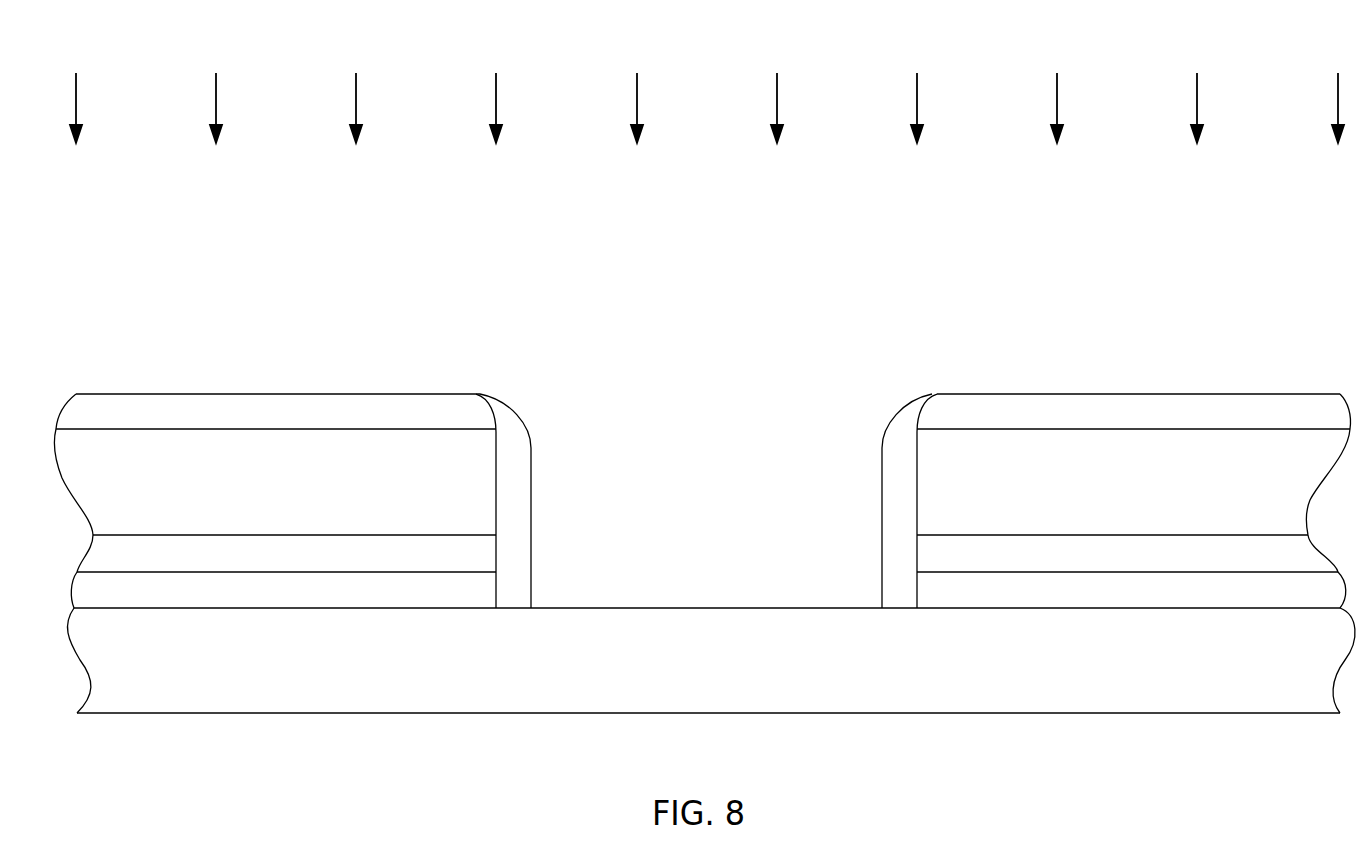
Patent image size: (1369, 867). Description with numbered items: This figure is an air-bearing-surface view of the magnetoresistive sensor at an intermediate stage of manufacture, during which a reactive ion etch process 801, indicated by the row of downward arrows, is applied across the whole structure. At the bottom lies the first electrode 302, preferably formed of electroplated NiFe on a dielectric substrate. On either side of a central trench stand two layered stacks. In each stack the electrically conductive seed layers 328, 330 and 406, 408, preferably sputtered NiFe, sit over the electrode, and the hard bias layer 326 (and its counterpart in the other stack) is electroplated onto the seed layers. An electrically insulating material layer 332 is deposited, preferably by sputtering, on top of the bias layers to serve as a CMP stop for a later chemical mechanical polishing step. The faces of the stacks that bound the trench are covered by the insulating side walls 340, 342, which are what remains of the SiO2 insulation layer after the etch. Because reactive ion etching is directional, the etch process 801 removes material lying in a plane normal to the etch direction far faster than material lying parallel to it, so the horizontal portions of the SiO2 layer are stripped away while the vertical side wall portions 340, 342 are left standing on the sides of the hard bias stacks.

The reactive ion etch process 801 is at (637, 90).
The first electrode 302 is at (776, 656).
The seed layer 330 is at (326, 588).
The seed layer 408 is at (326, 555).
The hard bias layer 326 is at (326, 480).
The insulating side wall 342 is at (518, 493).
The seed layer 328 is at (1166, 588).
The seed layer 406 is at (1166, 555).
The electrically insulating material layer 332 is at (1166, 412).
The insulating side wall 340 is at (890, 484).